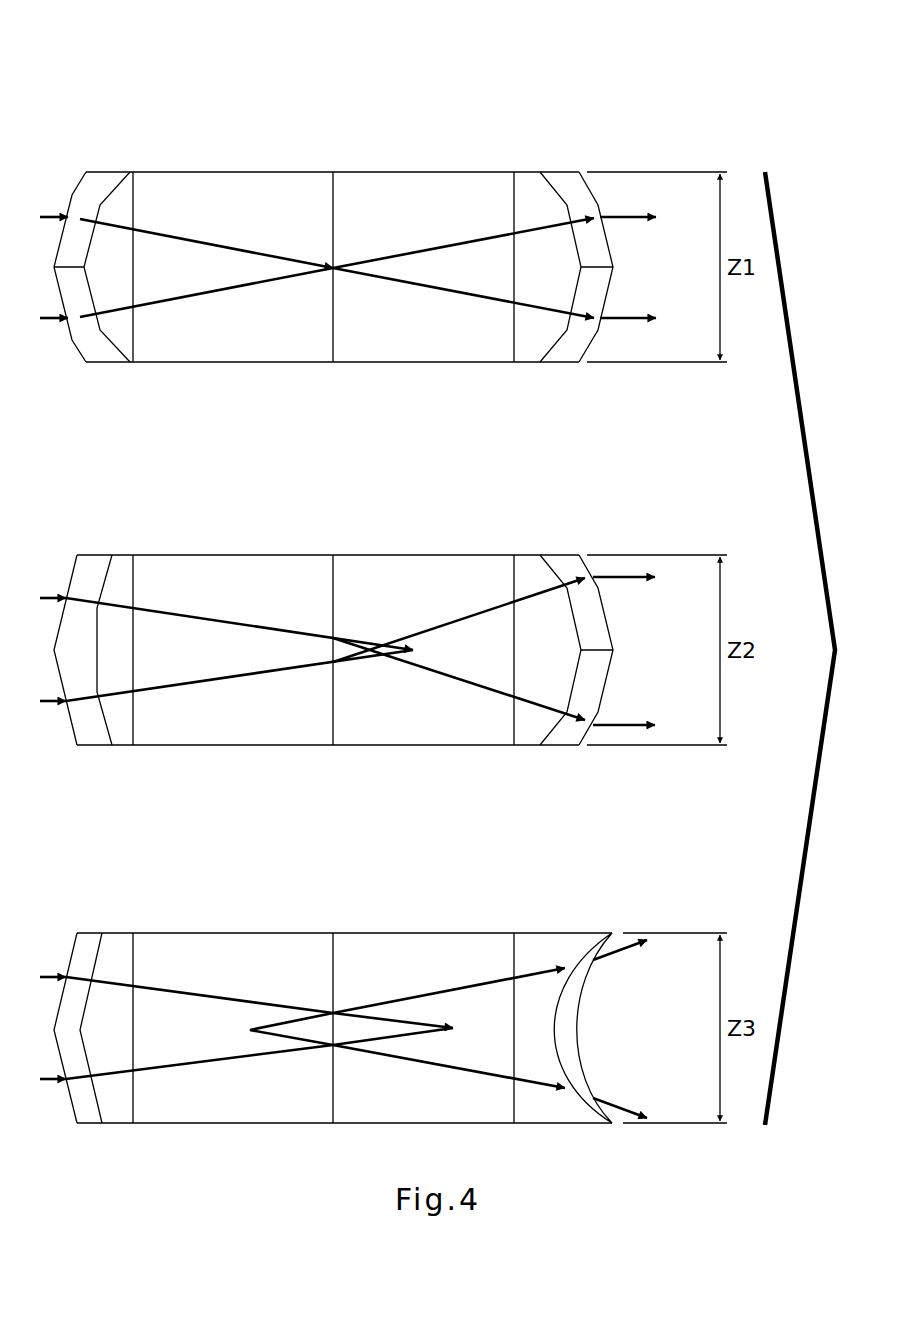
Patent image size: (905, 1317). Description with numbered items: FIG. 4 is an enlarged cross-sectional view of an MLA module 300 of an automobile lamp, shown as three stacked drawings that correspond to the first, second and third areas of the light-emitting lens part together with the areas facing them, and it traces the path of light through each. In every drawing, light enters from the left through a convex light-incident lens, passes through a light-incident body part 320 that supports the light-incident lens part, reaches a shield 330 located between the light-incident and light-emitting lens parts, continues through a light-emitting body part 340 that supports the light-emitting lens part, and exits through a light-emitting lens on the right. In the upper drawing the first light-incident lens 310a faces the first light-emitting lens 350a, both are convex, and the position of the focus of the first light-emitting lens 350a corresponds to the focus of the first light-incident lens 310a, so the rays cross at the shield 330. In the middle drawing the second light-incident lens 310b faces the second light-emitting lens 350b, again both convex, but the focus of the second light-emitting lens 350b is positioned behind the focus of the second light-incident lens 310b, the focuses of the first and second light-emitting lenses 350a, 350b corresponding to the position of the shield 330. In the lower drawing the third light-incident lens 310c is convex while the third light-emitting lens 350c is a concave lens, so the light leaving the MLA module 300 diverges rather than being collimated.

The MLA module 300 is at (87, 37).
The first light-incident lens 310a is at (100, 187).
The second light-incident lens 310b is at (95, 570).
The third light-incident lens 310c is at (88, 948).
The light-incident body part 320 is at (242, 187).
The shield 330 is at (327, 187).
The light-emitting body part 340 is at (437, 187).
The first light-emitting lens 350a is at (570, 187).
The second light-emitting lens 350b is at (570, 570).
The third light-emitting lens 350c is at (565, 1027).